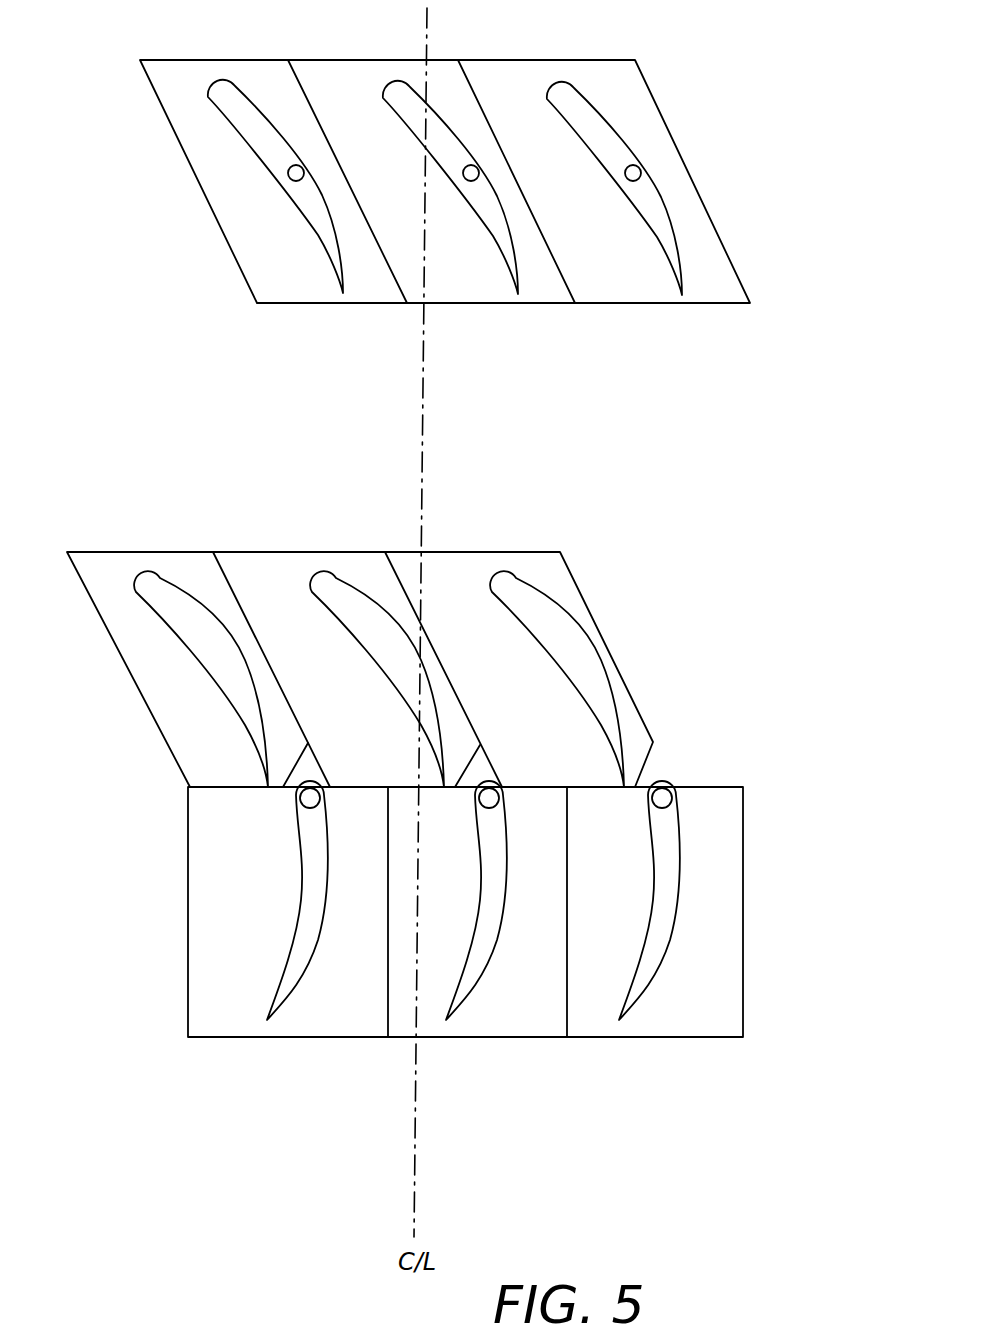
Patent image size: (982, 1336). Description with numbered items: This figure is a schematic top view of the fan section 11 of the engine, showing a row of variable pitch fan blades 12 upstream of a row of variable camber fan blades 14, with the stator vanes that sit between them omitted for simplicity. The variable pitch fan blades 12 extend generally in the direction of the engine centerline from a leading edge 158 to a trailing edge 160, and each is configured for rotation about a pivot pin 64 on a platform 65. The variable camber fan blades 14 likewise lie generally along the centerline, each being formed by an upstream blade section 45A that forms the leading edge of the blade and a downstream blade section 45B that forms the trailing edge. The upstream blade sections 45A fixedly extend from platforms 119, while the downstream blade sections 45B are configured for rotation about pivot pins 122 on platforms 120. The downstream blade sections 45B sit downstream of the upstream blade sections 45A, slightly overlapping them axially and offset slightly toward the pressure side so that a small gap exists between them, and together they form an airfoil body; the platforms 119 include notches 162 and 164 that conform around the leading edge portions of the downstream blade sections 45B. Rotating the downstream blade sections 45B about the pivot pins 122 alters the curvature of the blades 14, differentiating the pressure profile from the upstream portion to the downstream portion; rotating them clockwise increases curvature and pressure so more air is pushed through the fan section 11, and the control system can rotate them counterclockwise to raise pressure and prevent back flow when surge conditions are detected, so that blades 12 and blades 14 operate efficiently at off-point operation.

The fan section 11 is at (688, 608).
The variable pitch fan blade 12 is at (208, 84).
The variable camber fan blade 14 is at (695, 733).
The upstream blade section 45A is at (135, 577).
The downstream blade section 45B is at (274, 1013).
The pivot pin 64 is at (305, 170).
The platform 65 is at (709, 222).
The platform 119 is at (93, 565).
The platform 120 is at (328, 1020).
The pivot pin 122 is at (318, 789).
The leading edge 158 is at (178, 127).
The trailing edge 160 is at (722, 285).
The notch 162 is at (168, 763).
The notch 164 is at (650, 762).